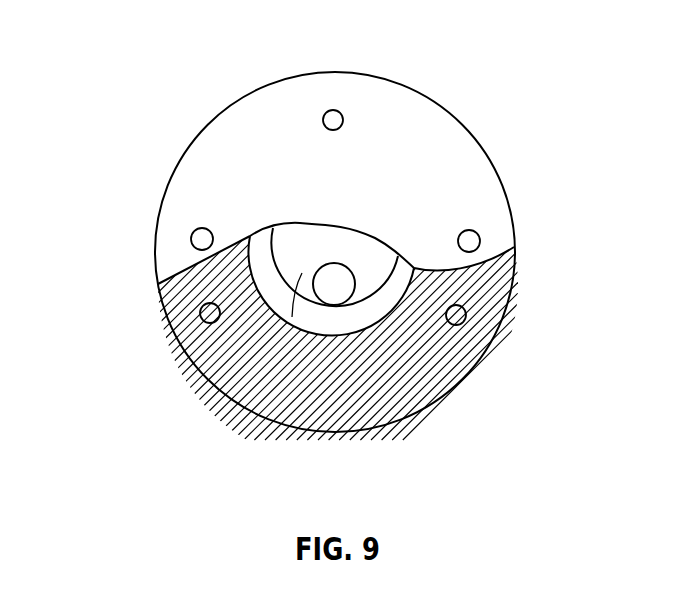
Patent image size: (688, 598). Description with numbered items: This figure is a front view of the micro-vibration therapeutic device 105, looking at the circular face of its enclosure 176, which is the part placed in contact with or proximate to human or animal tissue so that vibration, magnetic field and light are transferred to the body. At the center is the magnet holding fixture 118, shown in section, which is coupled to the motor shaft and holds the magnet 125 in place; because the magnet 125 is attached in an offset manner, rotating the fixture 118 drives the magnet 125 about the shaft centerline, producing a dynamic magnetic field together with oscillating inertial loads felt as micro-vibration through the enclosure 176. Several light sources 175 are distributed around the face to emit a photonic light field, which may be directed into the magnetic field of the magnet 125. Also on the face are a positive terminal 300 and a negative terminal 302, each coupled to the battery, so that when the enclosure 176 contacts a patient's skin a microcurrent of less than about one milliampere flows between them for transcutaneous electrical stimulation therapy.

The therapeutic device 105 is at (143, 50).
The enclosure 176 is at (208, 128).
The light source 175 is at (333, 120).
The negative terminal 302 is at (201, 239).
The positive terminal 300 is at (470, 241).
The magnet holding fixture 118 is at (242, 368).
The magnet 125 is at (334, 288).